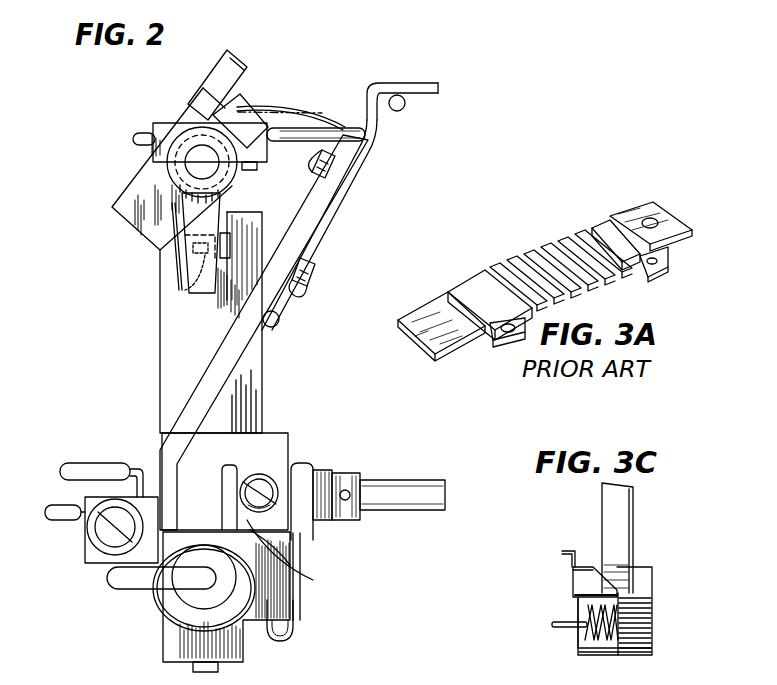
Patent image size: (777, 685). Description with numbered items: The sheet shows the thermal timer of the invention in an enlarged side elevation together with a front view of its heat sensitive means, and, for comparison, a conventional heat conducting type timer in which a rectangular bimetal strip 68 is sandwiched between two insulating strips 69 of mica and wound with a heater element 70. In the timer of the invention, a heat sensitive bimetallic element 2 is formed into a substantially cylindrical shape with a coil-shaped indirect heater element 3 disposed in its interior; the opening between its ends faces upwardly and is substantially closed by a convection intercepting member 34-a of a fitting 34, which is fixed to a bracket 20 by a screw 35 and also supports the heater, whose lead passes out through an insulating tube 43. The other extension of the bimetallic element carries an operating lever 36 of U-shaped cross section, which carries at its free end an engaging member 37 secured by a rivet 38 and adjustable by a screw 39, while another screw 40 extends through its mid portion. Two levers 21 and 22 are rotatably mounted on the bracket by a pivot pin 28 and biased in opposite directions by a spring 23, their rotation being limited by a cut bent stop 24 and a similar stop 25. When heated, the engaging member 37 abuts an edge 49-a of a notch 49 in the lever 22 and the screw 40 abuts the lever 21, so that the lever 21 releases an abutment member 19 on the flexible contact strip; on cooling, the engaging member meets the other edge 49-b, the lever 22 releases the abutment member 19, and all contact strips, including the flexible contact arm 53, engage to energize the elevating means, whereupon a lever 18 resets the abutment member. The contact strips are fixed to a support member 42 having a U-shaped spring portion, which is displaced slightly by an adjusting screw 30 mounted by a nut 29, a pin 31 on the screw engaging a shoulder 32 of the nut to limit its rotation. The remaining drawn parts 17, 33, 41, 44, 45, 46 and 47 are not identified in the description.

In FIG. 2, the heat sensitive bimetallic element 2 is at (157, 590).
In FIG. 3C, the heat sensitive bimetallic element 2 is at (652, 619).
In FIG. 3C, the indirect heater element 3 is at (585, 638).
In FIG. 2, the conductor rod 17 is at (405, 83).
In FIG. 2, the lever 18 is at (403, 108).
In FIG. 2, the abutment member 19 is at (180, 278).
In FIG. 2, the bracket 20 is at (262, 398).
In FIG. 2, the lever 21 is at (192, 298).
In FIG. 2, the lever 22 is at (217, 63).
In FIG. 2, the spring 23 is at (190, 115).
In FIG. 2, the cut bent stop 24 is at (232, 243).
In FIG. 2, the stop 25 is at (248, 170).
In FIG. 2, the pivot pin 28 is at (185, 162).
In FIG. 2, the nut 29 is at (325, 470).
In FIG. 2, the adjusting screw 30 is at (447, 495).
In FIG. 2, the pin 31 is at (348, 504).
In FIG. 2, the shoulder 32 is at (345, 473).
In FIG. 2, the base 33 is at (162, 440).
In FIG. 2, the fitting 34 is at (288, 438).
In FIG. 2, the convection intercepting member 34-a is at (292, 570).
In FIG. 3C, the convection intercepting member 34-a is at (580, 587).
In FIG. 2, the screw 35 is at (262, 482).
In FIG. 2, the operating lever 36 is at (218, 380).
In FIG. 3C, the operating lever 36 is at (633, 518).
In FIG. 2, the engaging member 37 is at (375, 152).
In FIG. 2, the rivet 38 is at (276, 328).
In FIG. 2, the screw 39 is at (310, 170).
In FIG. 2, the screw 40 is at (312, 276).
In FIG. 2, the strip 41 is at (178, 290).
In FIG. 2, the support member 42 is at (291, 633).
In FIG. 2, the insulating tube 43 is at (190, 600).
In FIG. 2, the pin 44 is at (125, 592).
In FIG. 2, the pin 45 is at (68, 521).
In FIG. 2, the pin 46 is at (112, 465).
In FIG. 2, the clip 47 is at (305, 553).
In FIG. 2, the notch 49 is at (232, 114).
In FIG. 2, the edge of the notch 49-a is at (262, 50).
In FIG. 2, the other edge of the notch 49-b is at (250, 110).
In FIG. 2, the flexible contact arm 53 is at (90, 565).
In FIG. 3A, the bimetal strip 68 is at (435, 302).
In FIG. 3A, the insulating strips 69 is at (466, 282).
In FIG. 3A, the heater element 70 is at (553, 246).